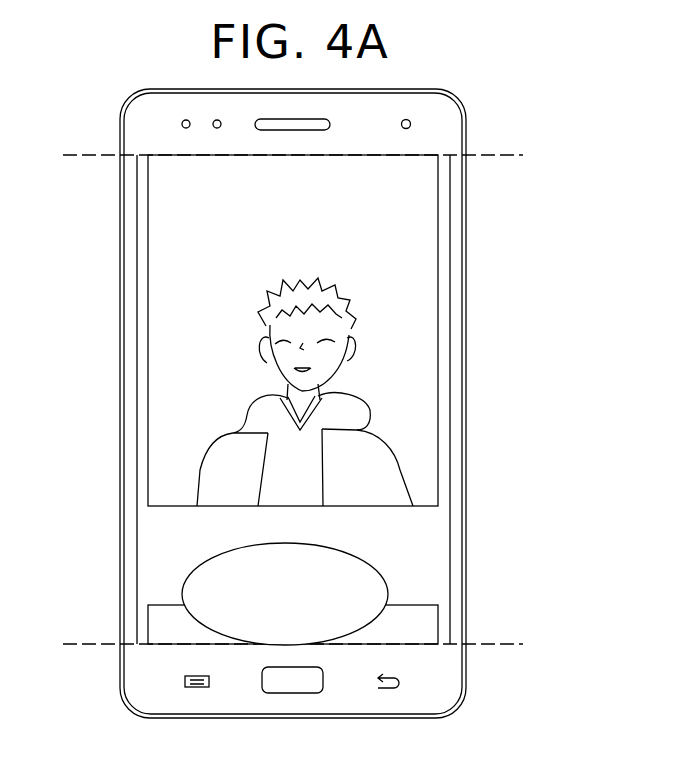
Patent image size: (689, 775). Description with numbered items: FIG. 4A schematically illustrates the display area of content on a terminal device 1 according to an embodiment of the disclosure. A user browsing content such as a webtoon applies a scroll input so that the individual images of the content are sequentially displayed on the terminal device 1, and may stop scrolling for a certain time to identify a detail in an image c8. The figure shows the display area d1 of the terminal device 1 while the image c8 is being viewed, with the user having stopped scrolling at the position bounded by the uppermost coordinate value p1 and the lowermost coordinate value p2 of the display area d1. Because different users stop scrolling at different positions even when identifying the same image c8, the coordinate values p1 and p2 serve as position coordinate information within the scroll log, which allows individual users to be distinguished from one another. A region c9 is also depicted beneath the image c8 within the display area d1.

The terminal device 1 is at (466, 133).
The uppermost coordinate value p1 is at (311, 157).
The lowermost coordinate value p2 is at (311, 653).
The display area d1 is at (137, 338).
The image c8 is at (430, 370).
The subtitle content c9 is at (430, 623).